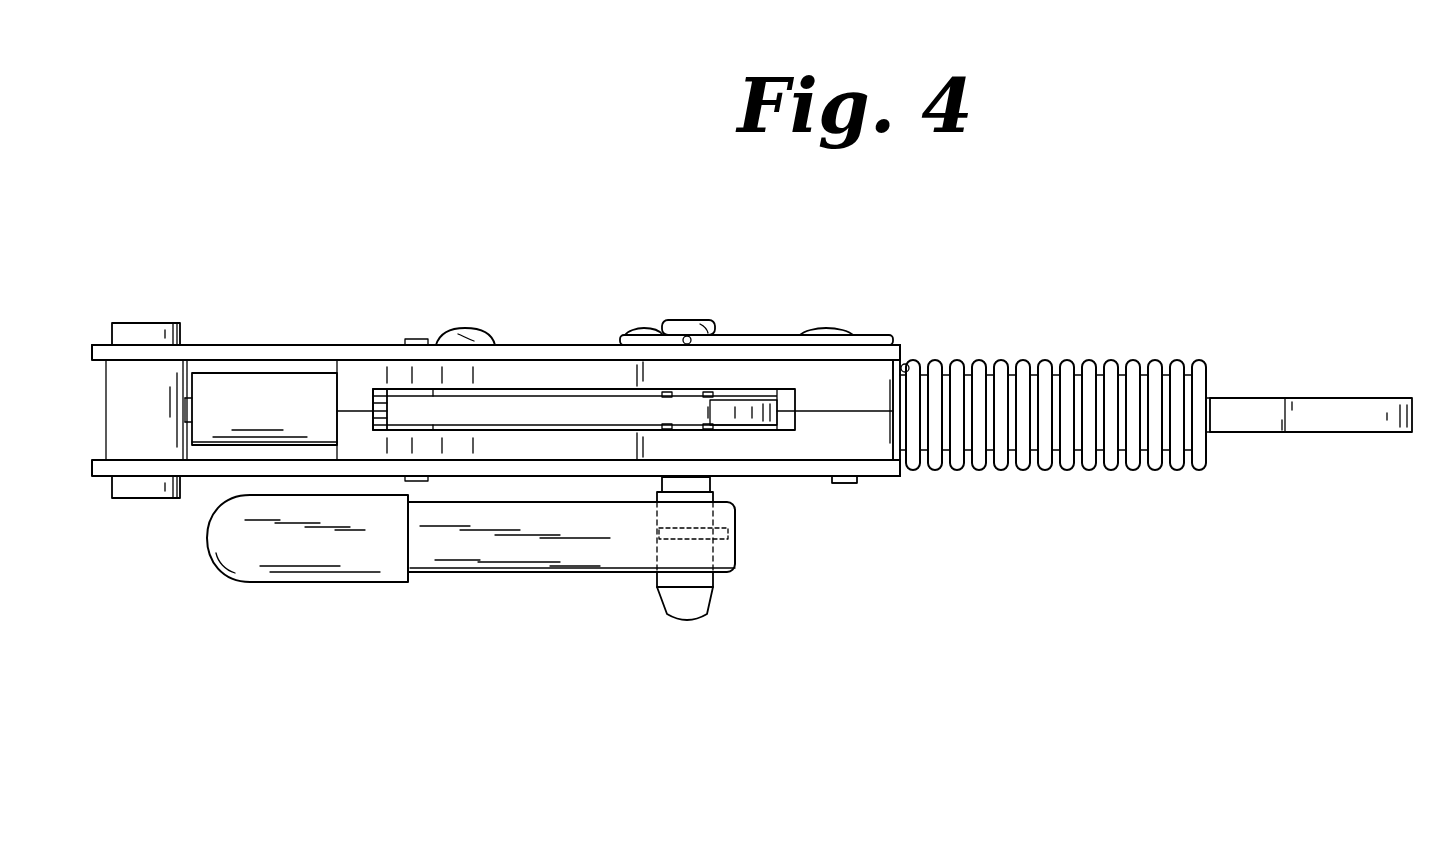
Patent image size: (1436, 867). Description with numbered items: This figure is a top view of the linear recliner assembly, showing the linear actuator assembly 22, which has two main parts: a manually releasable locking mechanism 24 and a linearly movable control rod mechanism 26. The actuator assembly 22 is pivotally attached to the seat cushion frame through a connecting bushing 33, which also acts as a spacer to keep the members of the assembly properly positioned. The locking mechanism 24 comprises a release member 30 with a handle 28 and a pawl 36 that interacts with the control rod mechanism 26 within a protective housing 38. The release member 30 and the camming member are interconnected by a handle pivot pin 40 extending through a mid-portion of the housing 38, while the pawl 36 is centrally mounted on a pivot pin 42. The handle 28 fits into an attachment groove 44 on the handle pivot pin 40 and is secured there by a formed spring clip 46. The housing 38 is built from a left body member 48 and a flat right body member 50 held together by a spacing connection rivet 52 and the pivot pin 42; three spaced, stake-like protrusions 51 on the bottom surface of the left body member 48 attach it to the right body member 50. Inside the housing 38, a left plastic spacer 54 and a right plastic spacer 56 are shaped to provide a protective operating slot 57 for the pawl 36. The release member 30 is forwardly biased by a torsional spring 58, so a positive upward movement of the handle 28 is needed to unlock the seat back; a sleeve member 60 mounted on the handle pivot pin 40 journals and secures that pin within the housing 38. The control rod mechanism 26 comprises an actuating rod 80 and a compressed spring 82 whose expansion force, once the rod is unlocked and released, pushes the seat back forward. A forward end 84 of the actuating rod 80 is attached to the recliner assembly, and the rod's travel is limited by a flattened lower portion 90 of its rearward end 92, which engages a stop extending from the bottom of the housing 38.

The linear actuator assembly 22 is at (715, 227).
The locking mechanism 24 is at (383, 274).
The control rod mechanism 26 is at (1065, 507).
The handle 28 is at (318, 568).
The release member 30 is at (496, 569).
The connecting bushing 33 is at (138, 499).
The pawl 36 is at (543, 405).
The housing 38 is at (817, 493).
The handle pivot pin 40 is at (684, 623).
The pivot pin 42 is at (416, 339).
The attachment groove 44 is at (725, 543).
The spring clip 46 is at (728, 533).
The left body member 48 is at (888, 480).
The right body member 50 is at (592, 345).
The stake-like protrusions 51 is at (470, 328).
The spacing connection rivet 52 is at (843, 487).
The left plastic spacer 54 is at (783, 455).
The right plastic spacer 56 is at (874, 372).
The protective operating slot 57 is at (383, 392).
The spring 58 is at (763, 338).
The sleeve member 60 is at (688, 320).
The actuating rod 80 is at (1278, 398).
The spring 82 is at (985, 368).
The forward end 84 is at (1320, 433).
The flattened lower portion 90 is at (193, 409).
The rearward end 92 is at (238, 386).